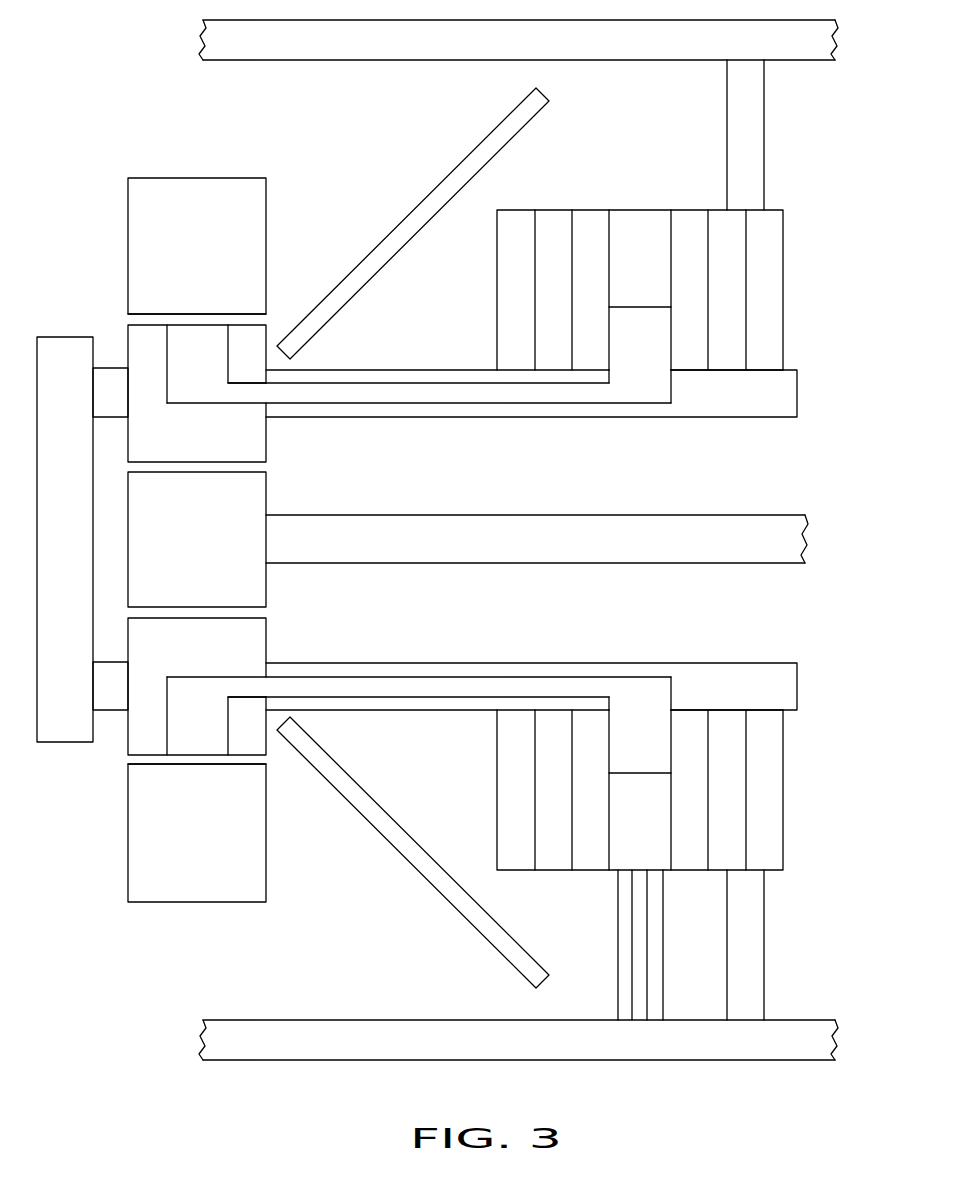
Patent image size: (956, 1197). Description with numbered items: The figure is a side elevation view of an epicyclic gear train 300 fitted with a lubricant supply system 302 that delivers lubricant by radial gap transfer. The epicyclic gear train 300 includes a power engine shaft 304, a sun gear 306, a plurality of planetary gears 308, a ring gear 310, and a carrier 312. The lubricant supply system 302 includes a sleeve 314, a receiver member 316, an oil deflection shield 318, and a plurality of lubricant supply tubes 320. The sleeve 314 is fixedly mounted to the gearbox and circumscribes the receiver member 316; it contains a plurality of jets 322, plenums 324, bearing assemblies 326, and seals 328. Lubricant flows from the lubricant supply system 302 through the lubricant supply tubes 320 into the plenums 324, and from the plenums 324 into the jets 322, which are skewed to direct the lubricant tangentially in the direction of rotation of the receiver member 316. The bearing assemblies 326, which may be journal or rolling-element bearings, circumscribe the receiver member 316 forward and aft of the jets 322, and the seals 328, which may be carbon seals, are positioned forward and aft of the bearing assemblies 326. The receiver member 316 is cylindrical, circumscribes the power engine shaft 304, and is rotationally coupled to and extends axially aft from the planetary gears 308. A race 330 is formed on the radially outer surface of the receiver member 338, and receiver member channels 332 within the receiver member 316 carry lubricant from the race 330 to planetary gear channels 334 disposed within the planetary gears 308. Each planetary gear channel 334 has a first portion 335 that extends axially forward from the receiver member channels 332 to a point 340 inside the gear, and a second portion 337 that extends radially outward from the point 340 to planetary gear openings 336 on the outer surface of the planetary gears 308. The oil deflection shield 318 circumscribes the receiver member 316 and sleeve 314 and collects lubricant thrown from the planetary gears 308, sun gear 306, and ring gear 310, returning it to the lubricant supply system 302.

The epicyclic gear train 300 is at (122, 128).
The lubricant supply system 302 is at (797, 352).
The power engine shaft 304 is at (522, 530).
The sun gear 306 is at (221, 551).
The planetary gears 308 is at (221, 439).
The ring gear 310 is at (221, 259).
The carrier 312 is at (62, 362).
The sleeve 314 is at (556, 198).
The receiver member 316 is at (710, 430).
The oil deflection shield 318 is at (467, 165).
The lubricant supply tubes 320 is at (618, 885).
The jets 322 is at (663, 337).
The plenums 324 is at (663, 269).
The bearing assemblies 326 is at (548, 292).
The seals 328 is at (517, 252).
The race 330 is at (663, 397).
The receiver member channels 332 is at (442, 383).
The planetary gear channels 334 is at (240, 405).
The first portion 335 is at (252, 393).
The planetary gear openings 336 is at (197, 323).
The second portion 337 is at (183, 345).
The receiver member 338 is at (470, 368).
The point 340 is at (173, 398).